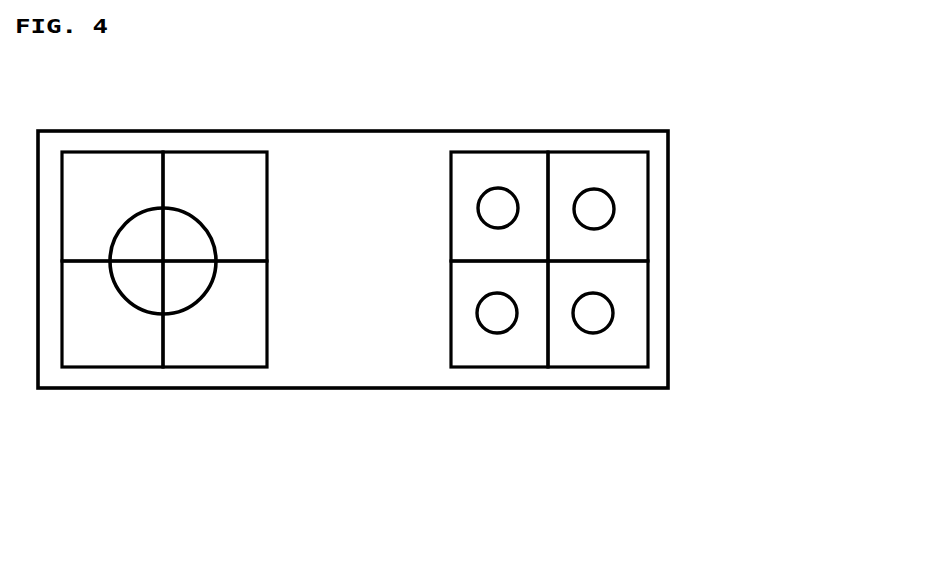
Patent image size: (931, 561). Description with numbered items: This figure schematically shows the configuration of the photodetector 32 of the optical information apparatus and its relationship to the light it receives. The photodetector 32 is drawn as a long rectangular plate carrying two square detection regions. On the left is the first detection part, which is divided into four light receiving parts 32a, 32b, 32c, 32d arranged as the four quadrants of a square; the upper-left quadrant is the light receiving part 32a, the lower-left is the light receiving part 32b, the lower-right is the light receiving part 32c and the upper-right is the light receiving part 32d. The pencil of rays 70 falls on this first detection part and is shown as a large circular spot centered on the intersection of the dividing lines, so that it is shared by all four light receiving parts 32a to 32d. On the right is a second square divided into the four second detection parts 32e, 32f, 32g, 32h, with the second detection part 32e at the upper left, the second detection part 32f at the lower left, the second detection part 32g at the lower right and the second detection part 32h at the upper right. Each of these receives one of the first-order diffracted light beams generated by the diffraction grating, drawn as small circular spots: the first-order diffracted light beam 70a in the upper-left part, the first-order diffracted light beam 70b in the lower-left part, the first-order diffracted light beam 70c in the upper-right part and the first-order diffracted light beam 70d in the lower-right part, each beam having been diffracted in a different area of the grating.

The photodetector 32 is at (672, 292).
The light receiving part 32a is at (98, 168).
The light receiving part 32b is at (98, 350).
The light receiving part 32c is at (198, 350).
The light receiving part 32d is at (198, 168).
The second detection part 32e is at (467, 167).
The second detection part 32f is at (467, 358).
The second detection part 32g is at (622, 315).
The second detection part 32h is at (563, 168).
The pencil of rays 70 is at (203, 217).
The first-order diffracted light beam 70a is at (513, 188).
The first-order diffracted light beam 70b is at (510, 328).
The first-order diffracted light beam 70c is at (617, 200).
The first-order diffracted light beam 70d is at (610, 327).